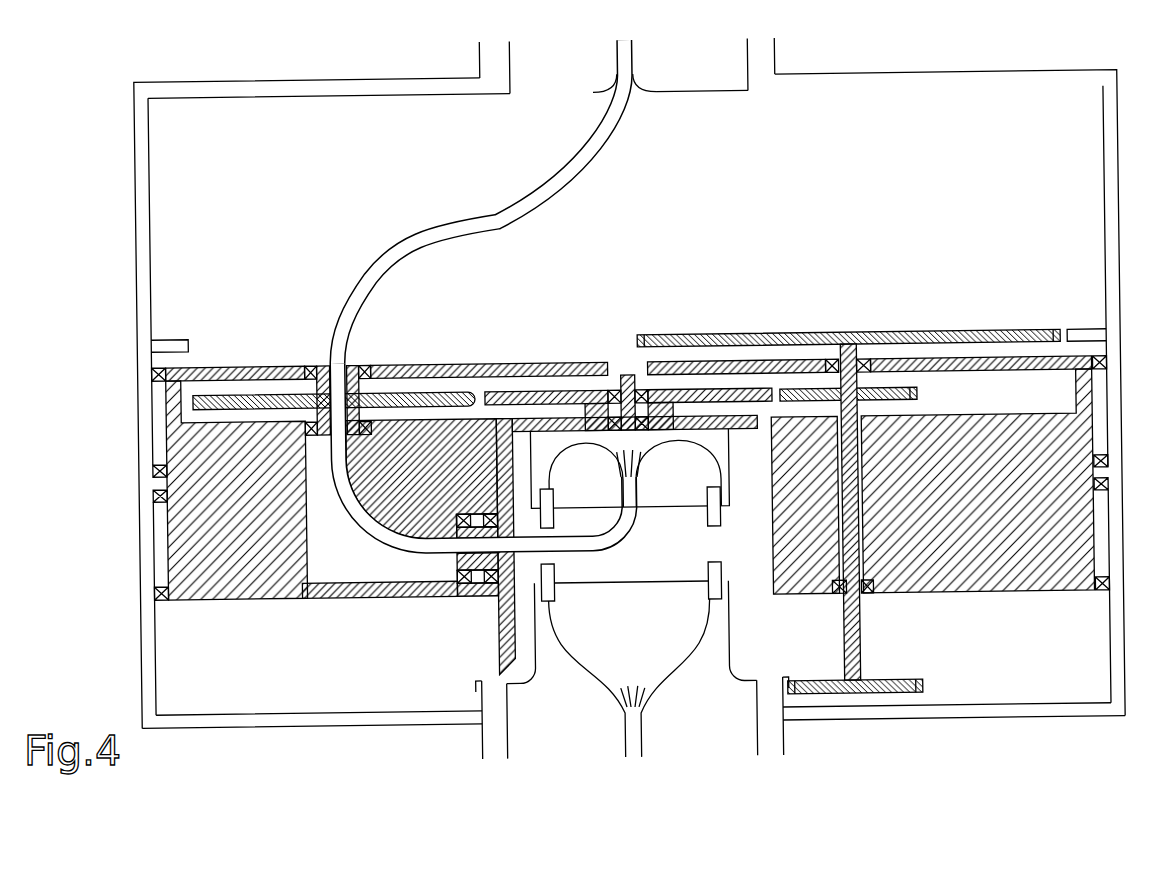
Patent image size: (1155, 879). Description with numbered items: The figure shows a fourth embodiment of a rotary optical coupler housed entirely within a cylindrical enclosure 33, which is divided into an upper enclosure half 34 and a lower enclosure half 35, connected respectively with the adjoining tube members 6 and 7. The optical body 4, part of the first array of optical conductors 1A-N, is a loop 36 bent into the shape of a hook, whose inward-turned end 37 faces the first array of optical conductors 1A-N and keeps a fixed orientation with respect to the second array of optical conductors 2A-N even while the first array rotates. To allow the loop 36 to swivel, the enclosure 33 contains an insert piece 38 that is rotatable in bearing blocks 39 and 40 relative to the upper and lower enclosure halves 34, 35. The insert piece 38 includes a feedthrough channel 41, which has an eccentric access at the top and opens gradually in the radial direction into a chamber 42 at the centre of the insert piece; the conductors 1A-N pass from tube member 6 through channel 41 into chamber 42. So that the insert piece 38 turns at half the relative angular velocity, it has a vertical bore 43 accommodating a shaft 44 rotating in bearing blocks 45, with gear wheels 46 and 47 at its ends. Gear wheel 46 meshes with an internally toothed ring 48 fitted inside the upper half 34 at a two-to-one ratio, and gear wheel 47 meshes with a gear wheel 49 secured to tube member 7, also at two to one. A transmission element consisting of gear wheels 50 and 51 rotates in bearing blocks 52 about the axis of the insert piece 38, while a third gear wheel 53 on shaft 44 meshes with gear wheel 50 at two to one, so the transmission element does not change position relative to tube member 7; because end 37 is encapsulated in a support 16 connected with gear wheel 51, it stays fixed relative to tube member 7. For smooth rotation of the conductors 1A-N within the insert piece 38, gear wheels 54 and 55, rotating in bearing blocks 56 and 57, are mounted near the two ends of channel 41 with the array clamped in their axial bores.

The optical body 4 is at (626, 396).
The tube member 6 is at (627, 63).
The tube member 7 is at (633, 719).
The support 16 is at (629, 479).
The first array of optical conductors 1A-N is at (606, 166).
The second array of optical conductors 2A-N is at (630, 678).
The cylindrical enclosure 33 is at (145, 414).
The upper enclosure half 34 is at (142, 271).
The lower enclosure half 35 is at (946, 730).
The loop 36 is at (387, 534).
The end of the loop 37 is at (632, 487).
The insert piece 38 is at (483, 364).
The bearing block 39 is at (153, 367).
The bearing block 40 is at (152, 488).
The feedthrough channel 41 is at (333, 540).
The chamber 42 is at (631, 603).
The vertical bore 43 is at (873, 593).
The shaft 44 is at (857, 643).
The bearing blocks 45 is at (864, 361).
The gear wheel 46 is at (949, 339).
The gear wheel 47 is at (901, 684).
The internally toothed ring 48 is at (183, 336).
The gear wheel 49 is at (478, 686).
The gear wheel 50 is at (718, 396).
The gear wheel 51 is at (735, 433).
The bearing blocks 52 is at (612, 395).
The third gear wheel 53 is at (918, 396).
The gear wheel 54 is at (263, 390).
The gear wheel 55 is at (497, 639).
The bearing block 56 is at (372, 397).
The bearing block 57 is at (463, 588).